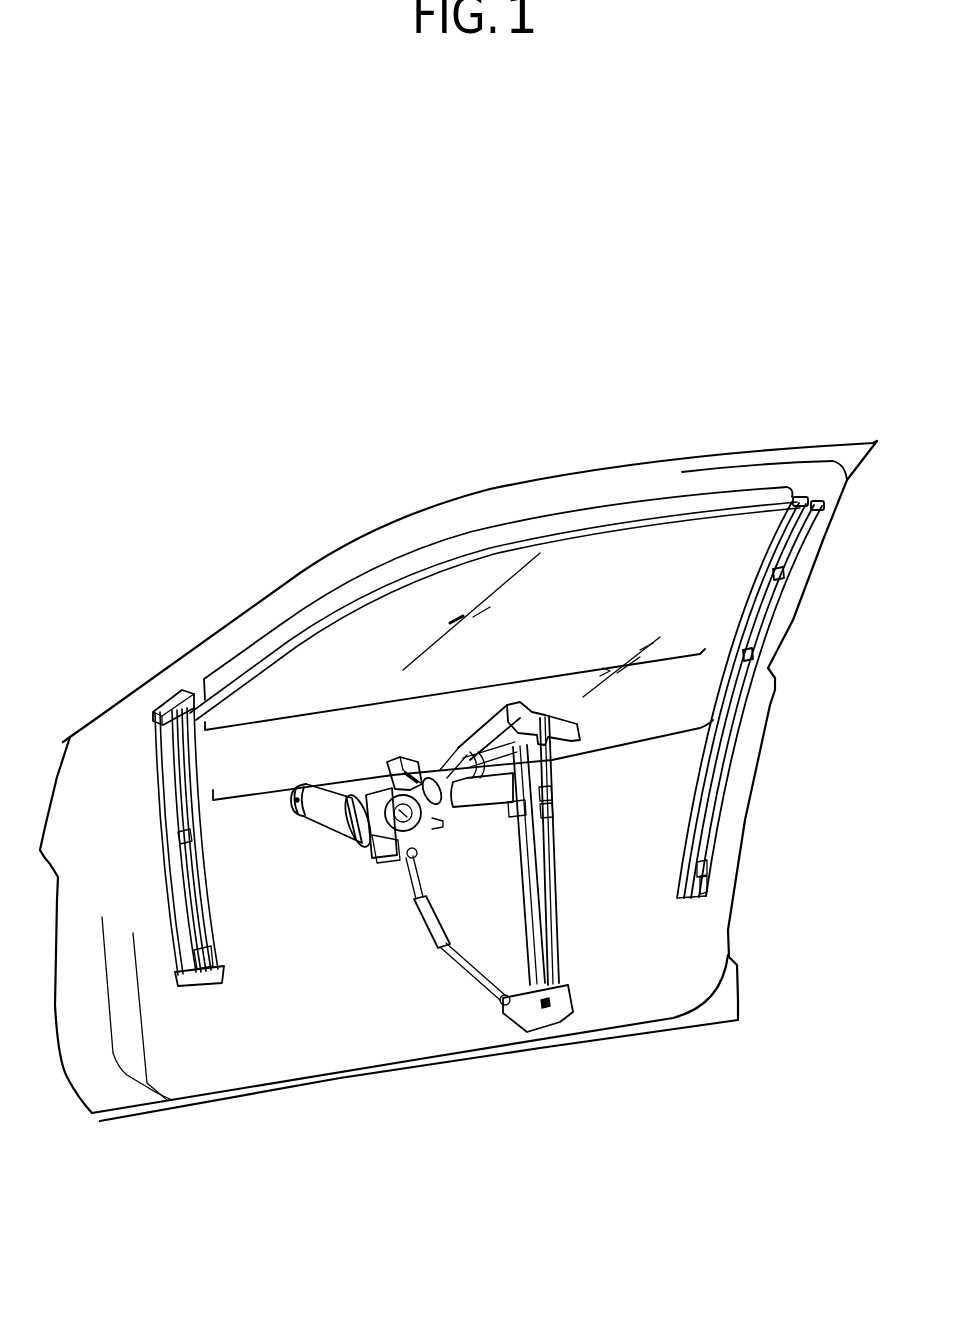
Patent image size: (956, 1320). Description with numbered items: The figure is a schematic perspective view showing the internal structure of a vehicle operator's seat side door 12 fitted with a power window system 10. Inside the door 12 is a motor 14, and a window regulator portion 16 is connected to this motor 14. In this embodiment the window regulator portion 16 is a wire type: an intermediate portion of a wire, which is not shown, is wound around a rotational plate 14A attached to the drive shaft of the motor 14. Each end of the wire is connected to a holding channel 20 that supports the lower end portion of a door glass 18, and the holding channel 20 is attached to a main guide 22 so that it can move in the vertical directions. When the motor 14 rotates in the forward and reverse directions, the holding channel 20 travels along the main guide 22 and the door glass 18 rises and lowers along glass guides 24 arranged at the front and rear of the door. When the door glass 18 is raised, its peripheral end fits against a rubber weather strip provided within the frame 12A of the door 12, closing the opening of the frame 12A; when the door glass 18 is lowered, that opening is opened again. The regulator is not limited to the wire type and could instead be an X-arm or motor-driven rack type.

The power window system 10 is at (318, 1048).
The vehicle operator's seat side door 12 is at (266, 622).
The frame 12A is at (567, 490).
The motor 14 is at (328, 817).
The rotational plate 14A is at (382, 850).
The window regulator portion 16 is at (422, 937).
The door glass 18 is at (463, 553).
The holding channel 20 is at (483, 807).
The main guide 22 is at (556, 896).
The glass guides 24 is at (216, 987).